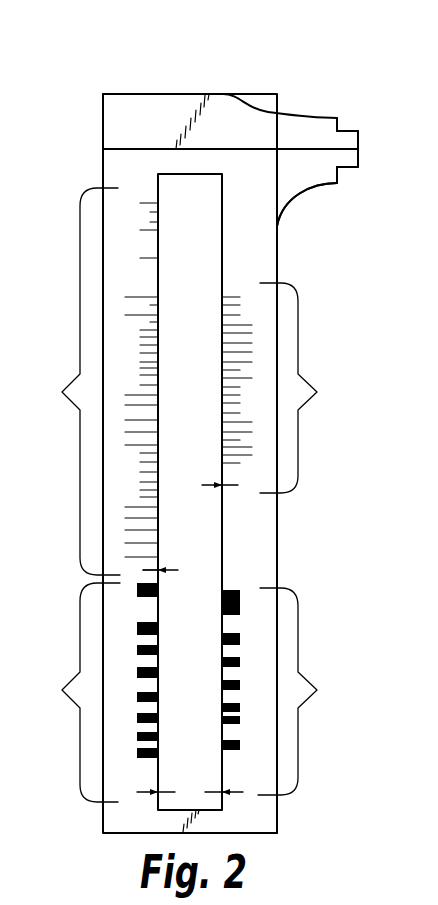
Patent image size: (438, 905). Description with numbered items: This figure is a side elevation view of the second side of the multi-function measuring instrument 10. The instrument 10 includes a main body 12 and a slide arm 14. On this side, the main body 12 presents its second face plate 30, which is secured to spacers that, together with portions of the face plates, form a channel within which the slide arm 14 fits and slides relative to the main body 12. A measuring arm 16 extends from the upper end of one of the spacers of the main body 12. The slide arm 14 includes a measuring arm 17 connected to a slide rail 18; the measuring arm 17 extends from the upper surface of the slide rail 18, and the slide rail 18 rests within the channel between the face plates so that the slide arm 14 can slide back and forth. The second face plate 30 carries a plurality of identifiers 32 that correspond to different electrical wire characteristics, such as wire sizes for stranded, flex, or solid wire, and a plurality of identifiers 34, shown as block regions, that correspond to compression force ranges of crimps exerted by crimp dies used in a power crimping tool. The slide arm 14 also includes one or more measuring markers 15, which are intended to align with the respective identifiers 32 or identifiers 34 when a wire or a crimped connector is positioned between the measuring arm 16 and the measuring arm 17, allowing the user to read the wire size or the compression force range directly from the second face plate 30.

The multi-function measuring instrument 10 is at (399, 84).
The main body 12 is at (281, 264).
The slide arm 14 is at (182, 87).
The measuring markers 15 is at (206, 486).
The measuring arm 16 is at (313, 176).
The measuring arm 17 is at (322, 126).
The slide rail 18 is at (203, 237).
The second face plate 30 is at (268, 523).
The identifiers 32 is at (65, 387).
The identifiers 34 is at (62, 688).